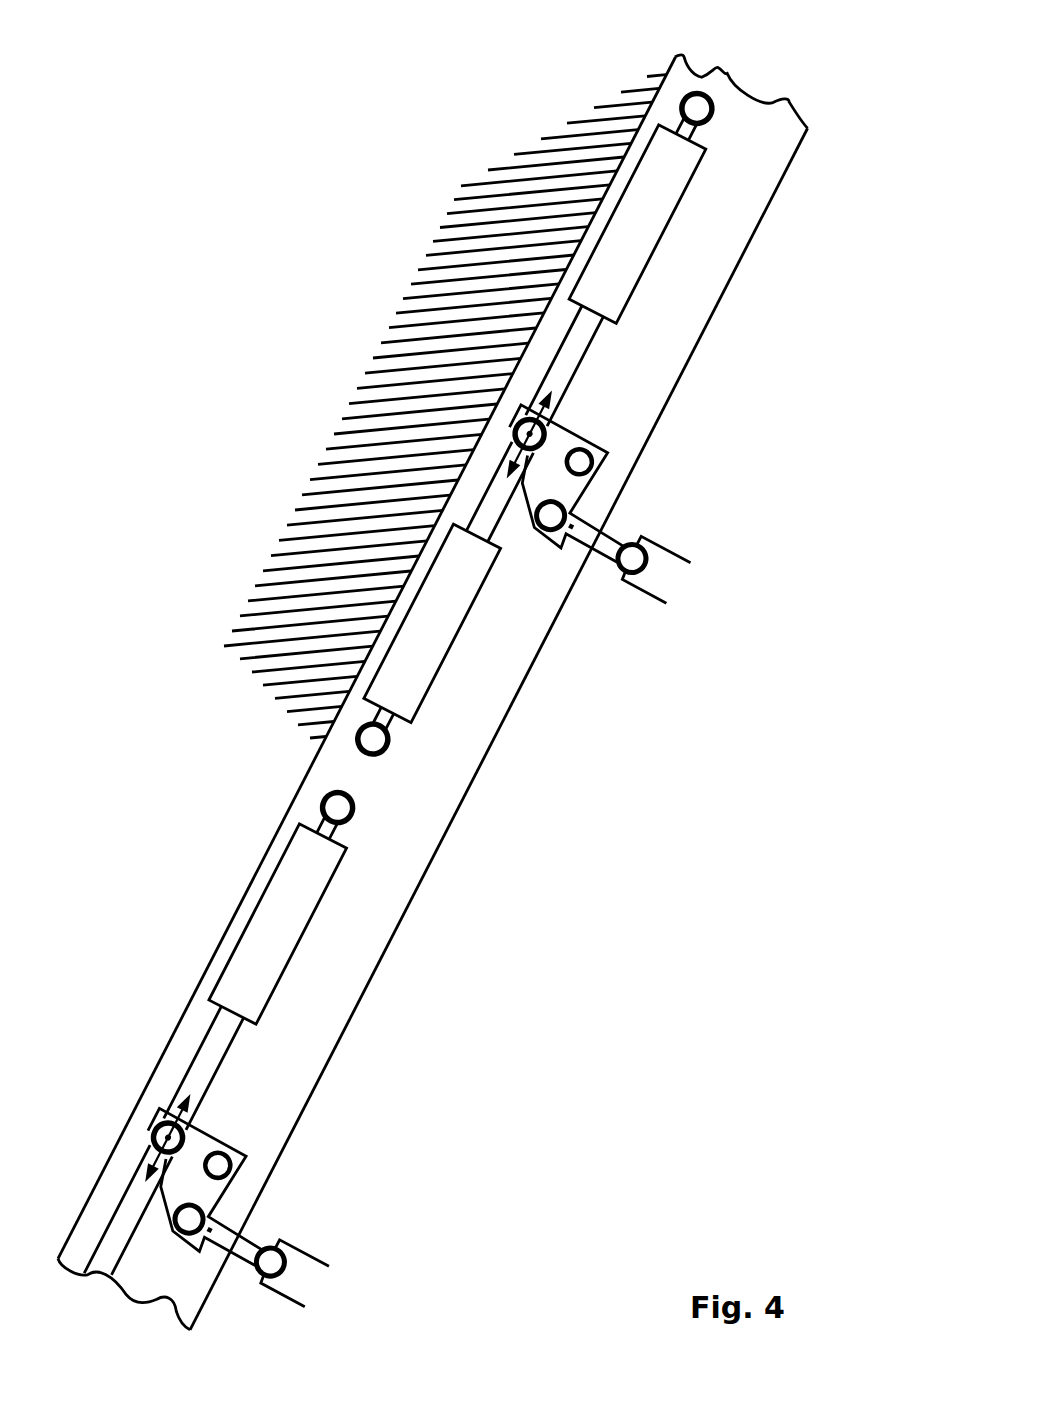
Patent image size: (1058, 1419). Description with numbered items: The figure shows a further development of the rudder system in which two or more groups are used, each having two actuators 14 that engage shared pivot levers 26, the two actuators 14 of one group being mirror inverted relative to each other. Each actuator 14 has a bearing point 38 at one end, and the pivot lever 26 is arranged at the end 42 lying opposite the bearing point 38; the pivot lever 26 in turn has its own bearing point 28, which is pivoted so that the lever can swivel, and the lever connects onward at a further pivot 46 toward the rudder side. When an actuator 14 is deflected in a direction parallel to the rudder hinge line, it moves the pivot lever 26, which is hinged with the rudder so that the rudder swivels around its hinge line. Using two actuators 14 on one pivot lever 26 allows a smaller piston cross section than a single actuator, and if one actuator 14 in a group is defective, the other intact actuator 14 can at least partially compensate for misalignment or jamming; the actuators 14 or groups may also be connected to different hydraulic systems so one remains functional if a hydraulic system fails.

The actuator 14 is at (654, 229).
The pivot lever 26 is at (578, 489).
The bearing point 28 is at (578, 460).
The bearing point 38 is at (697, 106).
The end 42 is at (528, 434).
The anchor pin 46 is at (618, 549).